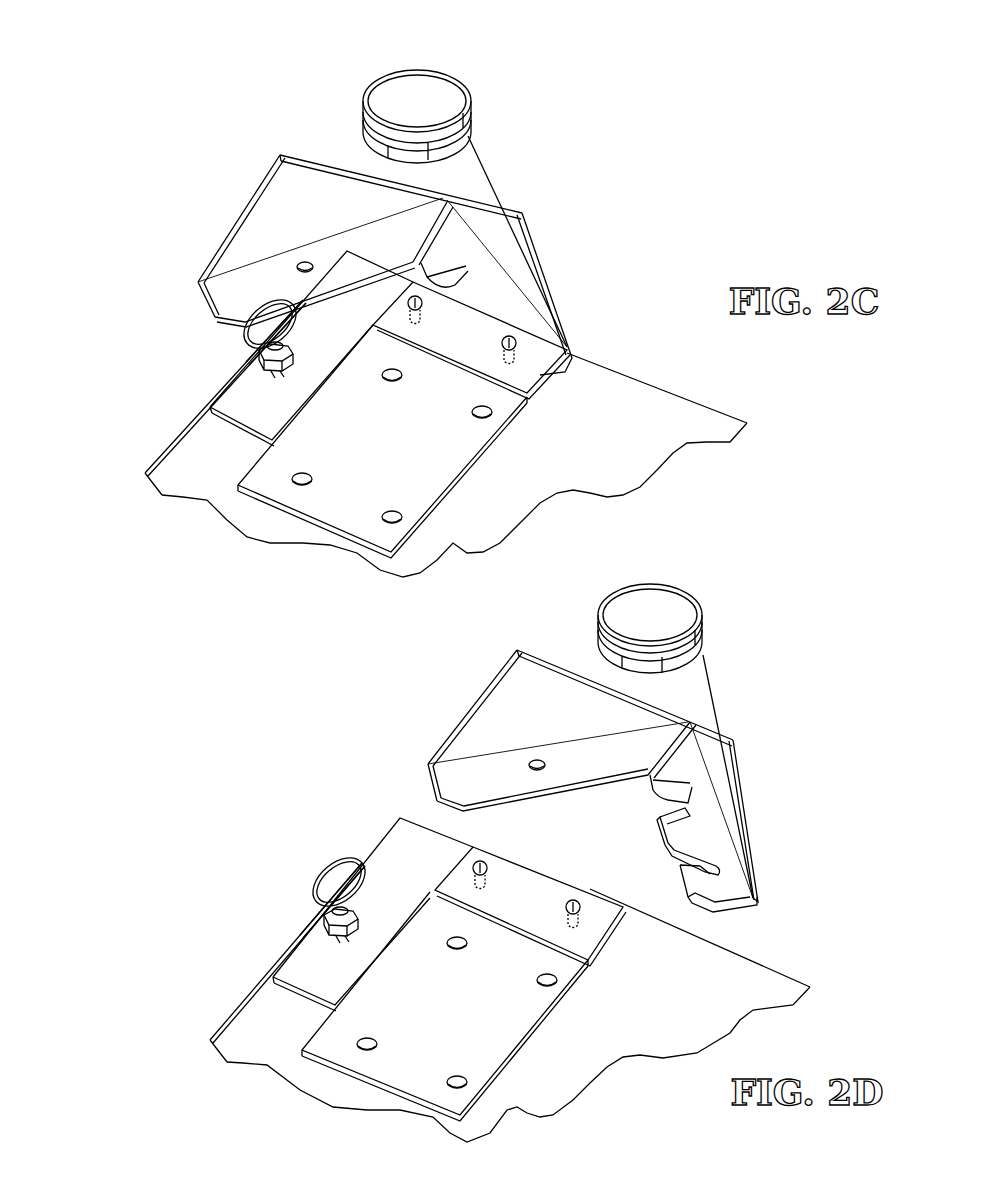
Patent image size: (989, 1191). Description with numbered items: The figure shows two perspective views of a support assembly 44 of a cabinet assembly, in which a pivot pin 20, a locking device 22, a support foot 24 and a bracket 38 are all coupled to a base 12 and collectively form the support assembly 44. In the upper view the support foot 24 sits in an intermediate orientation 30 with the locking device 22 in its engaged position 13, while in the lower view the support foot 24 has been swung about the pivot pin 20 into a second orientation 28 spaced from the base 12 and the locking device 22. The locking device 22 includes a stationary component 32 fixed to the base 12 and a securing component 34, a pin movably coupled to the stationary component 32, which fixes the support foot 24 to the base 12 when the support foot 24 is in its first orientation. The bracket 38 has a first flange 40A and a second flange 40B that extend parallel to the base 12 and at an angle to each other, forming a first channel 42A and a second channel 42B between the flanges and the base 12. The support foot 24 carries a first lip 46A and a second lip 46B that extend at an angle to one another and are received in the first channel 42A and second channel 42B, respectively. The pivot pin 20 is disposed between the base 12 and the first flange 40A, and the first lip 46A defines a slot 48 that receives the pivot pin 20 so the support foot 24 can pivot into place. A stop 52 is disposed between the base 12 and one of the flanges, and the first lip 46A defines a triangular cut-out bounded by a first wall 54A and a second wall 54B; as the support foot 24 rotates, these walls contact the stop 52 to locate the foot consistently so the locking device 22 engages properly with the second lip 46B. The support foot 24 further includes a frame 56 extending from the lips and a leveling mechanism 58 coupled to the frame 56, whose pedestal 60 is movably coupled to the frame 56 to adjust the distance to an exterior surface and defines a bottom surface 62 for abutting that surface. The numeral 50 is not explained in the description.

In FIG. 2C, the base 12 is at (687, 420).
In FIG. 2D, the base 12 is at (767, 980).
In FIG. 2C, the engaged position 13 is at (258, 352).
In FIG. 2D, the engaged position 13 is at (322, 917).
In FIG. 2C, the pivot pin 20 is at (515, 343).
In FIG. 2D, the pivot pin 20 is at (580, 907).
In FIG. 2C, the locking device 22 is at (258, 358).
In FIG. 2D, the locking device 22 is at (322, 915).
In FIG. 2C, the support foot 24 is at (462, 165).
In FIG. 2D, the support foot 24 is at (685, 680).
In FIG. 2D, the second orientation 28 is at (730, 598).
In FIG. 2C, the intermediate orientation 30 is at (455, 60).
In FIG. 2C, the stationary component 32 is at (273, 373).
In FIG. 2D, the stationary component 32 is at (333, 942).
In FIG. 2C, the securing component 34 is at (263, 300).
In FIG. 2D, the securing component 34 is at (316, 886).
In FIG. 2C, the bracket 38 is at (337, 495).
In FIG. 2D, the bracket 38 is at (400, 1053).
In FIG. 2C, the first flange 40A is at (490, 327).
In FIG. 2D, the first flange 40A is at (530, 885).
In FIG. 2C, the second flange 40B is at (240, 425).
In FIG. 2D, the second flange 40B is at (313, 970).
In FIG. 2C, the first channel 42A is at (575, 395).
In FIG. 2D, the first channel 42A is at (607, 942).
In FIG. 2C, the second channel 42B is at (220, 430).
In FIG. 2D, the second channel 42B is at (283, 1000).
In FIG. 2C, the support assembly 44 is at (152, 140).
In FIG. 2D, the support assembly 44 is at (207, 745).
In FIG. 2C, the first lip 46A is at (493, 287).
In FIG. 2D, the first lip 46A is at (705, 832).
In FIG. 2C, the second lip 46B is at (377, 247).
In FIG. 2D, the second lip 46B is at (463, 777).
In FIG. 2D, the slot 48 is at (740, 870).
In FIG. 2C, the hole 50 is at (304, 262).
In FIG. 2D, the hole 50 is at (536, 762).
In FIG. 2C, the stop 52 is at (413, 303).
In FIG. 2D, the stop 52 is at (478, 866).
In FIG. 2C, the first wall 54A is at (447, 277).
In FIG. 2D, the first wall 54A is at (665, 760).
In FIG. 2C, the second wall 54B is at (462, 287).
In FIG. 2D, the second wall 54B is at (690, 790).
In FIG. 2C, the frame 56 is at (342, 152).
In FIG. 2D, the frame 56 is at (572, 652).
In FIG. 2C, the leveling mechanism 58 is at (392, 88).
In FIG. 2D, the leveling mechanism 58 is at (630, 605).
In FIG. 2C, the pedestal 60 is at (415, 90).
In FIG. 2D, the pedestal 60 is at (653, 607).
In FIG. 2C, the bottom surface 62 is at (450, 100).
In FIG. 2D, the bottom surface 62 is at (675, 602).